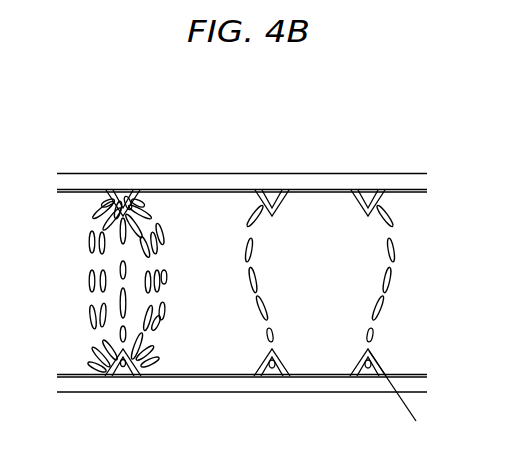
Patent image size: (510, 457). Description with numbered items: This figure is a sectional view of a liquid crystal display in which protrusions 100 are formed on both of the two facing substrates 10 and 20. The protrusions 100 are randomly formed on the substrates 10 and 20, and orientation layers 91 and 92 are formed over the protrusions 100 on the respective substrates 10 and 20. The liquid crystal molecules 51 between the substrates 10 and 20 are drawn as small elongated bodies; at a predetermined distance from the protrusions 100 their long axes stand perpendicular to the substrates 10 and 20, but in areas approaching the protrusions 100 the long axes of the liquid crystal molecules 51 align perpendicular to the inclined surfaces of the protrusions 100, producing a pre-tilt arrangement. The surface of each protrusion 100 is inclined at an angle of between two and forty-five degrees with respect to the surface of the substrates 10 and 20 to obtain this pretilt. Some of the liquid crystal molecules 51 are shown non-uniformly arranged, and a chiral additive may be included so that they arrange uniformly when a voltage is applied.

The substrate 10 is at (415, 385).
The substrate 20 is at (417, 182).
The orientation layer 91 is at (57, 376).
The orientation layer 92 is at (57, 192).
The protrusion 100 is at (124, 195).
The liquid crystal molecule 51 is at (106, 204).